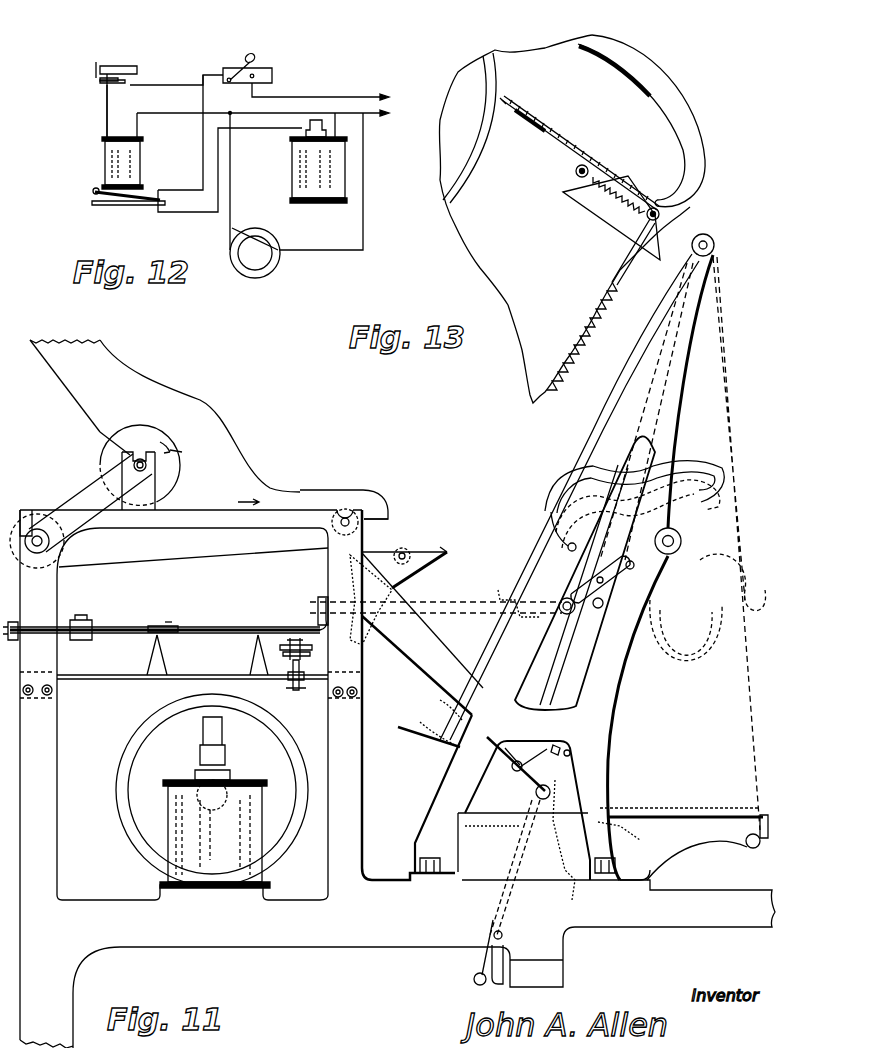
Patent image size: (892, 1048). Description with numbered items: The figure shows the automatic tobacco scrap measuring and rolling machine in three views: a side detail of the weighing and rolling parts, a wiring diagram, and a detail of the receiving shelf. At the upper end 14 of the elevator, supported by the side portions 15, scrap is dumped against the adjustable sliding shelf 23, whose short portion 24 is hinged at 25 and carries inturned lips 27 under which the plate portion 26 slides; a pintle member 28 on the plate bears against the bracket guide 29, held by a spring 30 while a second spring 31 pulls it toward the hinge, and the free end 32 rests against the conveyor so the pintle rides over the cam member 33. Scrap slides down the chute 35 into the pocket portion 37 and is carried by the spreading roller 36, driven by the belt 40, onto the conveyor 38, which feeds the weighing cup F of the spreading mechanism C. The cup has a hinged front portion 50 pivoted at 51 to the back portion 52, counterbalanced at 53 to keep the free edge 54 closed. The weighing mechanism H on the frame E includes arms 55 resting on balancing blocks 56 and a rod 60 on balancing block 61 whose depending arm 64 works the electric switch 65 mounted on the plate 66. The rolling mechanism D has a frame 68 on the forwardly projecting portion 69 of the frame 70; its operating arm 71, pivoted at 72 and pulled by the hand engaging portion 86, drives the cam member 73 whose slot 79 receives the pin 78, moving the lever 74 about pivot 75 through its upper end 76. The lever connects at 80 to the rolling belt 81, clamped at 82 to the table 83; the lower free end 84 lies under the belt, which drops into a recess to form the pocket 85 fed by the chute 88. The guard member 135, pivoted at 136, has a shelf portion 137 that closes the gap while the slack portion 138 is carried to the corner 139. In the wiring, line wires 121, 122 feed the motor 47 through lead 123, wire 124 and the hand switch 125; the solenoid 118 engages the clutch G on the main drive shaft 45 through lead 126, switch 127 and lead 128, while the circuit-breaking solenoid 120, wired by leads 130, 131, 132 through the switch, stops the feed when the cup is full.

In FIG. 13, the upper end of conveyor 14 is at (478, 62).
In FIG. 13, the side portions 15 is at (533, 46).
In FIG. 13, the adjustable sliding shelf 23 is at (566, 140).
In FIG. 13, the short portion 24 is at (576, 150).
In FIG. 13, the hinge 25 is at (580, 180).
In FIG. 13, the plate portion 26 is at (606, 165).
In FIG. 13, the inturned lips 27 is at (540, 115).
In FIG. 13, the pintle member 28 is at (652, 208).
In FIG. 13, the bracket guide 29 is at (658, 240).
In FIG. 13, the spring 30 is at (582, 356).
In FIG. 13, the second spring 31 is at (612, 208).
In FIG. 13, the free end of plate 32 is at (506, 97).
In FIG. 13, the cam member 33 is at (706, 158).
In FIG. 11, the chute 35 is at (112, 380).
In FIG. 11, the spreading roller 36 is at (136, 432).
In FIG. 11, the pocket portion 37 is at (100, 434).
In FIG. 11, the conveyor 38 is at (190, 528).
In FIG. 11, the belt 40 is at (79, 500).
In FIG. 11, the main drive shaft 45 is at (196, 781).
In FIG. 12, the motor 47 is at (263, 263).
In FIG. 11, the hinged front portion 50 is at (425, 571).
In FIG. 11, the pivot 51 is at (403, 552).
In FIG. 11, the back portion 52 is at (355, 518).
In FIG. 11, the counterbalance 53 is at (449, 549).
In FIG. 11, the free edge 54 is at (390, 630).
In FIG. 11, the arms 55 is at (122, 628).
In FIG. 11, the balancing blocks 56 is at (163, 657).
In FIG. 11, the rod 60 is at (180, 627).
In FIG. 11, the balancing block 61 is at (250, 668).
In FIG. 12, the arm 64 is at (118, 66).
In FIG. 11, the arm 64 is at (314, 652).
In FIG. 12, the electric switch 65 is at (105, 84).
In FIG. 11, the electric switch 65 is at (283, 672).
In FIG. 11, the plate 66 is at (145, 681).
In FIG. 11, the frame of rolling mechanism 68 is at (440, 800).
In FIG. 11, the forwardly projecting portion 69 is at (420, 948).
In FIG. 11, the frame 70 is at (163, 948).
In FIG. 11, the operating arm 71 is at (582, 680).
In FIG. 13, the pivot 72 is at (715, 245).
In FIG. 11, the cam member 73 is at (725, 486).
In FIG. 11, the lever 74 is at (570, 705).
In FIG. 11, the pivot 75 is at (568, 615).
In FIG. 11, the upper end of lever 76 is at (568, 547).
In FIG. 11, the pin 78 is at (650, 599).
In FIG. 11, the slot 79 is at (632, 575).
In FIG. 11, the connection 80 is at (515, 774).
In FIG. 11, the rolling belt 81 is at (672, 810).
In FIG. 11, the clamp 82 is at (760, 828).
In FIG. 11, the table 83 is at (685, 840).
In FIG. 11, the lower free end of arm 84 is at (542, 800).
In FIG. 11, the pocket 85 is at (573, 886).
In FIG. 11, the hand engaging portion 86 is at (572, 753).
In FIG. 11, the chute 88 is at (428, 669).
In FIG. 12, the solenoid 118 is at (347, 190).
In FIG. 12, the circuit-breaking solenoid 120 is at (103, 165).
In FIG. 12, the line wire 121 is at (370, 95).
In FIG. 12, the line wire 122 is at (378, 115).
In FIG. 12, the lead 123 is at (364, 240).
In FIG. 12, the wire 124 is at (232, 178).
In FIG. 12, the hand switch 125 is at (252, 62).
In FIG. 12, the lead 126 is at (247, 128).
In FIG. 12, the switch 127 is at (145, 206).
In FIG. 12, the lead 128 is at (185, 190).
In FIG. 12, the lead 130 is at (168, 83).
In FIG. 12, the lead 131 is at (106, 120).
In FIG. 12, the lead 132 is at (153, 113).
In FIG. 11, the guard member 135 is at (520, 826).
In FIG. 11, the pivot 136 is at (476, 982).
In FIG. 11, the shelf portion 137 is at (416, 732).
In FIG. 11, the slack portion 138 is at (436, 723).
In FIG. 11, the corner of table 139 is at (628, 828).
In FIG. 11, the spreading mechanism C is at (184, 452).
In FIG. 11, the rolling mechanism D is at (672, 400).
In FIG. 11, the frame E is at (56, 660).
In FIG. 11, the weighing cup F is at (388, 531).
In FIG. 11, the clutch G is at (128, 833).
In FIG. 11, the weighing mechanism H is at (168, 622).